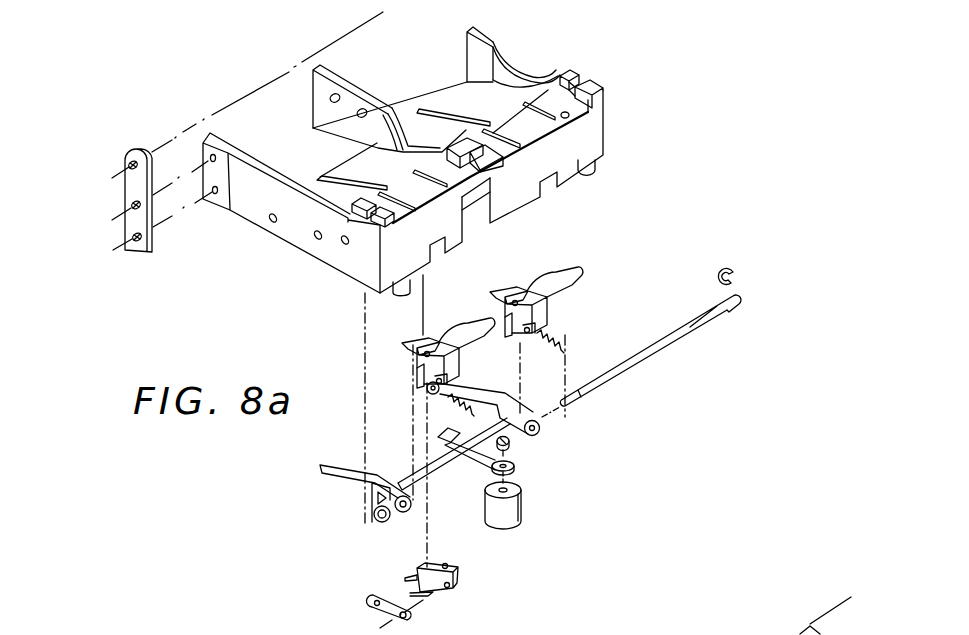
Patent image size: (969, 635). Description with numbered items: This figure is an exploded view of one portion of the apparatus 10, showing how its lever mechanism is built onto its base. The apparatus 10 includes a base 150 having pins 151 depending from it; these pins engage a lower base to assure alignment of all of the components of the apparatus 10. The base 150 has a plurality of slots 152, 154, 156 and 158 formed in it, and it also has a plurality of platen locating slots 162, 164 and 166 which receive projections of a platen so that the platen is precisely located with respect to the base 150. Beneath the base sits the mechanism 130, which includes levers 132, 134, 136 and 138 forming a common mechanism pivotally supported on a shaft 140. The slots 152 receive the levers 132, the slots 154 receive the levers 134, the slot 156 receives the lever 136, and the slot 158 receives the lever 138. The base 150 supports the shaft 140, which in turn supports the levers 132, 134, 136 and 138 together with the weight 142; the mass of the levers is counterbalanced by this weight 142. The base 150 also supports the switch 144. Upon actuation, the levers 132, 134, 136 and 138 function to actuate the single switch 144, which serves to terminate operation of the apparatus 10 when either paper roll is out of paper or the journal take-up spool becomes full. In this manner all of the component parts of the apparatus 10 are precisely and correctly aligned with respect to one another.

The apparatus 10 is at (205, 108).
The mechanism 130 is at (343, 506).
The levers 132 is at (555, 298).
The levers 134 is at (442, 358).
The lever 136 is at (480, 395).
The lever 138 is at (332, 476).
The shaft 140 is at (636, 360).
The weight 142 is at (523, 515).
The switch 144 is at (480, 567).
The base 150 is at (290, 233).
The pins 151 is at (592, 175).
The slots 152 is at (560, 140).
The slots 154 is at (472, 180).
The slot 156 is at (458, 117).
The slot 158 is at (320, 182).
The platen locating slot 162 is at (357, 230).
The platen locating slot 164 is at (492, 193).
The platen locating slot 166 is at (583, 83).